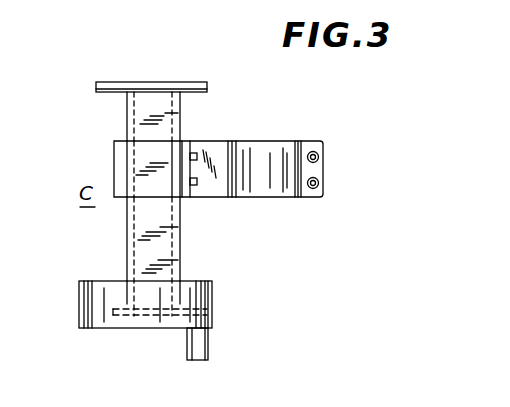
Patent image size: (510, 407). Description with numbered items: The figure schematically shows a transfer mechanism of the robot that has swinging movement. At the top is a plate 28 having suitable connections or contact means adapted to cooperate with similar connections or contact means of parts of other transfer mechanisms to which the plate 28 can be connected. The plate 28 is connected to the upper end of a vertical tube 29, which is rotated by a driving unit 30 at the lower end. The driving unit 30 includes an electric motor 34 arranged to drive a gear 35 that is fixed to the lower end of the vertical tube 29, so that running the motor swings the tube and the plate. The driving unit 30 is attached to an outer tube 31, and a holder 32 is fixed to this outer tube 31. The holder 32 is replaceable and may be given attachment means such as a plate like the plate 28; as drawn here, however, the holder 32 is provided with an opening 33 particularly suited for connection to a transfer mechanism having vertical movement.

The plate 28 is at (200, 81).
The vertical tube 29 is at (158, 112).
The driving unit 30 is at (210, 291).
The outer tube 31 is at (181, 240).
The holder 32 is at (325, 150).
The opening 33 is at (267, 152).
The electric motor 34 is at (210, 342).
The gear 35 is at (150, 318).